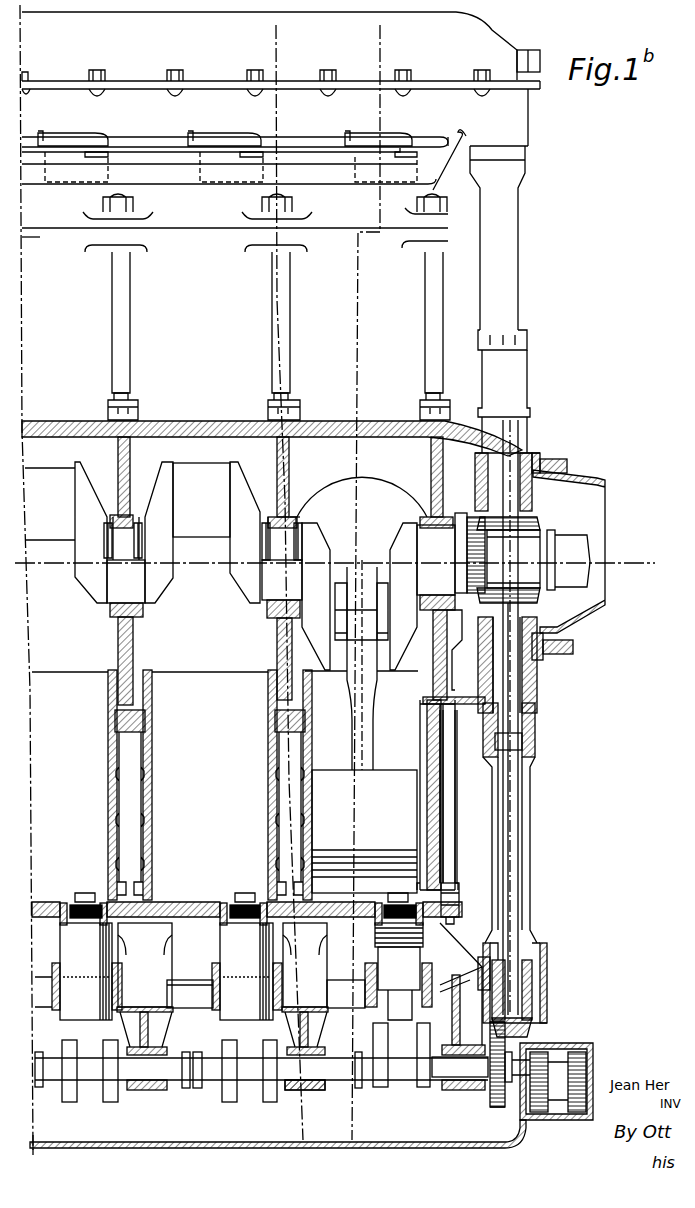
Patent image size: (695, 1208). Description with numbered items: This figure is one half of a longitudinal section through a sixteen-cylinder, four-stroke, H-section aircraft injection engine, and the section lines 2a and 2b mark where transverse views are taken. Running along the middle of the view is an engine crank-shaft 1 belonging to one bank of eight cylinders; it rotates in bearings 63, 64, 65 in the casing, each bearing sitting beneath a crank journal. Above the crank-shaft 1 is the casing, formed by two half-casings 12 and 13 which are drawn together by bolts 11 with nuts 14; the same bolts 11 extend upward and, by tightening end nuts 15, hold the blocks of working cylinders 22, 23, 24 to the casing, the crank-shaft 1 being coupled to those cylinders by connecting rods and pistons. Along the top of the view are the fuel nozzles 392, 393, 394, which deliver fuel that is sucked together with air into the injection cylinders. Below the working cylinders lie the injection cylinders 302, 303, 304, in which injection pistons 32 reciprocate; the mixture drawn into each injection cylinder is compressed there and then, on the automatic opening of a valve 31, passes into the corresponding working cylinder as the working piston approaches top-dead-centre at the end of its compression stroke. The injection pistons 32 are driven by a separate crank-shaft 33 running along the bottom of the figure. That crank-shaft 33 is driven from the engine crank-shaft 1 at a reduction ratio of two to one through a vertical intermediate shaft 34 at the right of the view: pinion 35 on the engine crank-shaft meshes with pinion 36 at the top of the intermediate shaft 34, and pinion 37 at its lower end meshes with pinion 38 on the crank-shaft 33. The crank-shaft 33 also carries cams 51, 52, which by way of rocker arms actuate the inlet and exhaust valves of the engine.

The engine crank-shaft 1 is at (115, 588).
The half-casing 12 is at (51, 527).
The half-casing 13 is at (397, 423).
The bolt 11 is at (122, 331).
The nut 14 is at (137, 402).
The end nut 15 is at (133, 207).
The cylinder 22 is at (64, 717).
The cylinder 23 is at (210, 714).
The cylinder 24 is at (361, 726).
The section line 2a is at (377, 579).
The section line 2b is at (303, 579).
The bearing 63 is at (143, 613).
The bearing 64 is at (265, 615).
The bearing 65 is at (448, 625).
The injection cylinder 302 is at (94, 961).
The injection cylinder 303 is at (227, 937).
The injection cylinder 304 is at (379, 961).
The valve 31 is at (400, 895).
The injection piston 32 is at (399, 983).
The crank-shaft 33 is at (55, 1075).
The intermediate shaft 34 is at (512, 804).
The pinion 35 is at (478, 572).
The pinion 36 is at (515, 590).
The pinion 37 is at (533, 1023).
The pinion 38 is at (493, 1092).
The nozzle 392 is at (58, 137).
The nozzle 393 is at (202, 135).
The nozzle 394 is at (352, 130).
The cam 51 is at (355, 1072).
The cam 52 is at (303, 1088).